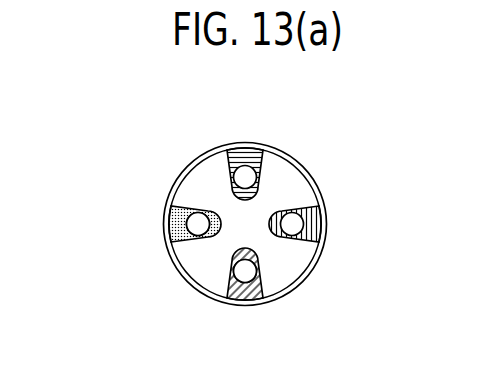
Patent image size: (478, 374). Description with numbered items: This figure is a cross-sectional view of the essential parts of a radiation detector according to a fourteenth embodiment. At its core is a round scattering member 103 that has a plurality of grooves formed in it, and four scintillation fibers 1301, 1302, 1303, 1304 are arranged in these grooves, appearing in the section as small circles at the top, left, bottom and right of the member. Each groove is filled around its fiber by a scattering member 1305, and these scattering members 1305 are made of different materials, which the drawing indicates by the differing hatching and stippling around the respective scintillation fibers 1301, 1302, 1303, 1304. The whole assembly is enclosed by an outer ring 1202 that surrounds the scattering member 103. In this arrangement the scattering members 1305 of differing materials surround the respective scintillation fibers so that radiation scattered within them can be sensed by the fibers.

The scattering member 103 is at (200, 180).
The outer tube 1202 is at (307, 170).
The scintillation fiber 1301 is at (243, 180).
The scintillation fiber 1302 is at (192, 224).
The scintillation fiber 1303 is at (237, 268).
The scintillation fiber 1304 is at (295, 226).
The scattering members 1305 is at (168, 233).